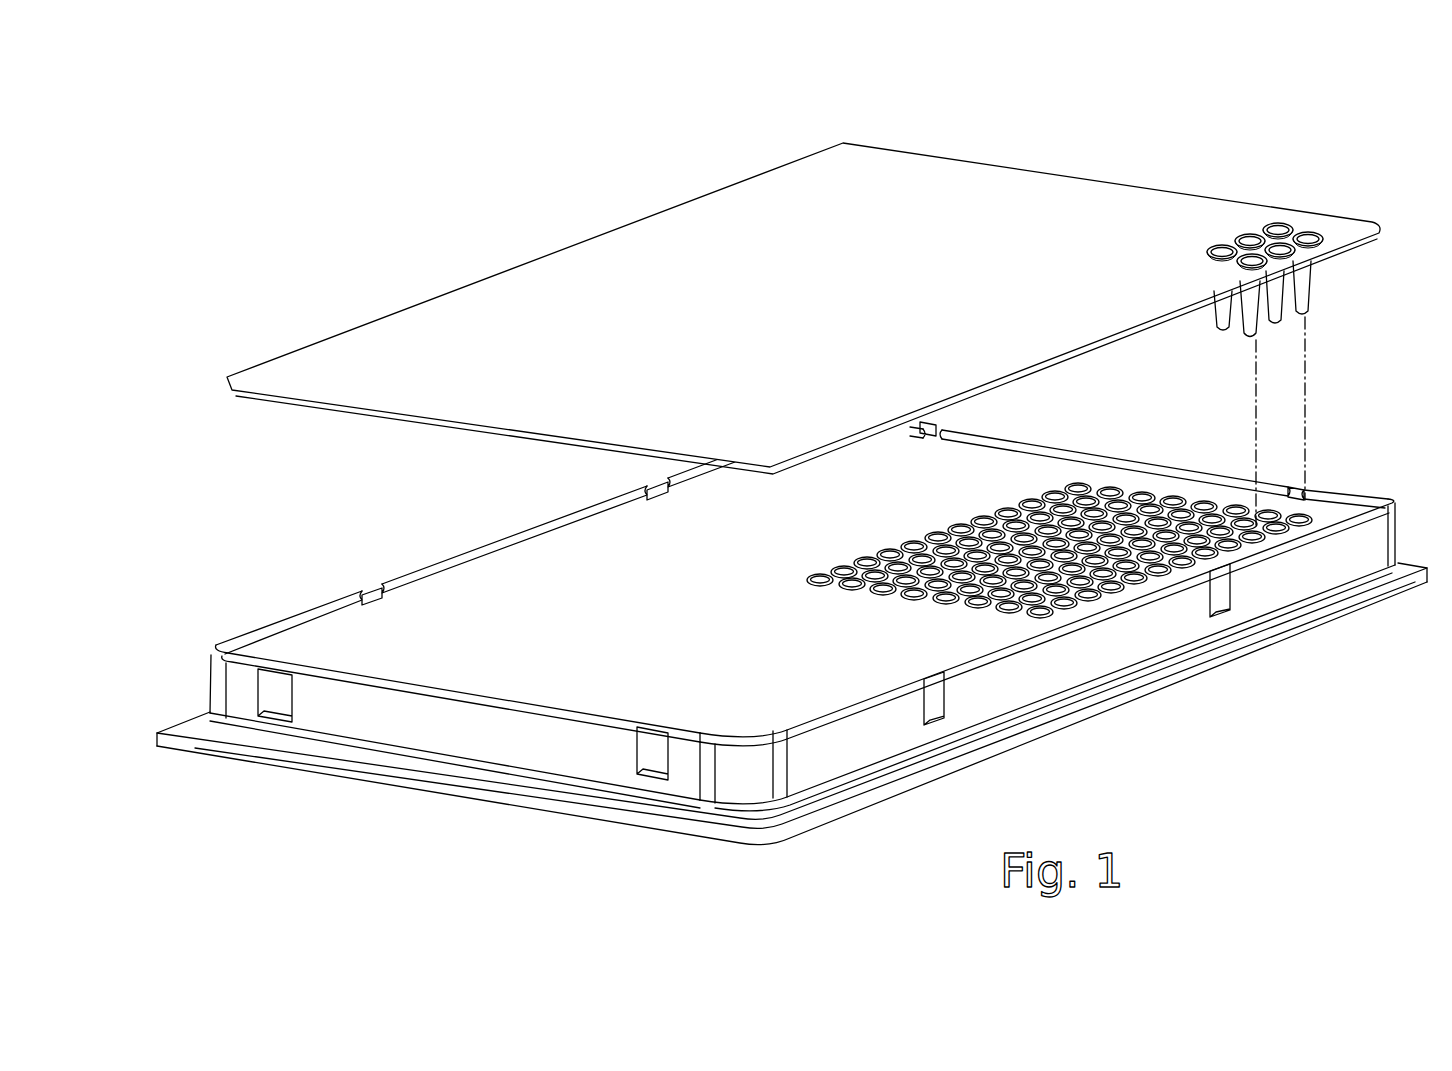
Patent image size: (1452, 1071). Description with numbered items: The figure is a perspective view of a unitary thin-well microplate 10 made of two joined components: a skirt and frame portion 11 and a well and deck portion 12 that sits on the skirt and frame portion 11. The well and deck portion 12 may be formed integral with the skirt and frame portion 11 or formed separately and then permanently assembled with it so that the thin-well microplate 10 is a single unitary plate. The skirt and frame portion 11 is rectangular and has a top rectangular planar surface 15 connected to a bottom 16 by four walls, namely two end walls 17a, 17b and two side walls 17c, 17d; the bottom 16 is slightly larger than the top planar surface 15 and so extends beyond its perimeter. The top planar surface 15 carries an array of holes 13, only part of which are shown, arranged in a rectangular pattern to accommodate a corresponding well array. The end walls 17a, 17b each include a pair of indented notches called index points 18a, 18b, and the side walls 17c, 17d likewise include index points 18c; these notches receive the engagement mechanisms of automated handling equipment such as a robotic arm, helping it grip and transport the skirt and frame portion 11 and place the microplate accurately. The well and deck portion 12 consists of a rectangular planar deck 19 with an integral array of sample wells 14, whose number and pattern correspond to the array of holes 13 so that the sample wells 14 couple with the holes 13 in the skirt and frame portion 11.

The thin-well microplate 10 is at (362, 222).
The skirt and frame portion 11 is at (231, 644).
The well and deck portion 12 is at (331, 336).
The array of holes 13 is at (1306, 503).
The array of sample wells 14 is at (1305, 242).
The top rectangular planar surface 15 is at (455, 595).
The bottom 16 is at (189, 721).
The end wall 17a is at (352, 738).
The end wall 17b is at (1068, 450).
The side wall 17c is at (1337, 577).
The side wall 17d is at (527, 528).
The index points 18a is at (280, 718).
The index points 18b is at (923, 432).
The index points 18c is at (649, 484).
The planar deck 19 is at (815, 165).